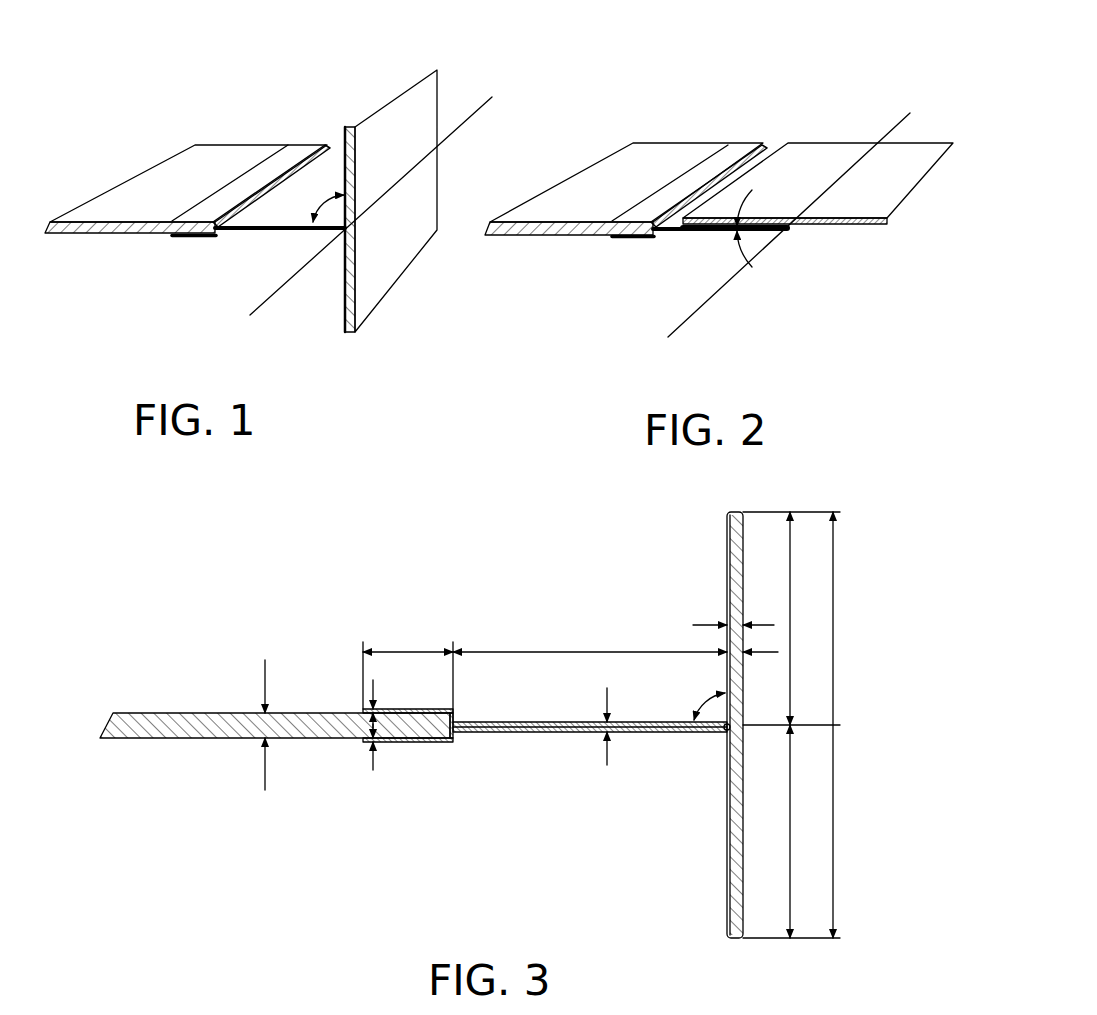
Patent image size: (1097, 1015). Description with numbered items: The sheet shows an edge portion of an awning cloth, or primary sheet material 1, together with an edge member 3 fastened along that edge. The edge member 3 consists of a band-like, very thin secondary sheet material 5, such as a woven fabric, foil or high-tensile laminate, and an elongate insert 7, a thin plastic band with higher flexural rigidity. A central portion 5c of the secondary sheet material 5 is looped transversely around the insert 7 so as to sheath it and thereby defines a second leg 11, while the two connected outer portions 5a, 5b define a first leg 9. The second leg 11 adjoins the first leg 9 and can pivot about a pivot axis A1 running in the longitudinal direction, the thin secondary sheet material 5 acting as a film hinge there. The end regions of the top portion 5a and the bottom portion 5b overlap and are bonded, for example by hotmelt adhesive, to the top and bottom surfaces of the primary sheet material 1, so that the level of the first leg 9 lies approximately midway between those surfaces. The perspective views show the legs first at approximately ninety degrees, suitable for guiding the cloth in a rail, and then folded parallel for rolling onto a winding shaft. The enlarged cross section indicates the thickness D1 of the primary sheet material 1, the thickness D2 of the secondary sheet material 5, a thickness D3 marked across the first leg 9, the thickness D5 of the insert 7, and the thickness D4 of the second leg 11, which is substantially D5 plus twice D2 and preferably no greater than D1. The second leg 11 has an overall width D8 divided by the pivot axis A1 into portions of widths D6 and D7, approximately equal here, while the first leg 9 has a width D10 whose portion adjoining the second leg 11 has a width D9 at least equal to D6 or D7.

In FIG. 1, the primary sheet material 1 is at (158, 163).
In FIG. 2, the primary sheet material 1 is at (597, 170).
In FIG. 3, the primary sheet material 1 is at (190, 713).
In FIG. 1, the edge member 3 is at (441, 60).
In FIG. 2, the edge member 3 is at (850, 138).
In FIG. 3, the edge member 3 is at (577, 734).
In FIG. 1, the secondary sheet material 5 is at (278, 233).
In FIG. 2, the secondary sheet material 5 is at (680, 233).
In FIG. 1, the top outer portion of the secondary sheet material 5a is at (335, 148).
In FIG. 2, the top outer portion of the secondary sheet material 5a is at (689, 186).
In FIG. 3, the top outer portion of the secondary sheet material 5a is at (566, 722).
In FIG. 1, the bottom outer portion of the secondary sheet material 5b is at (245, 234).
In FIG. 3, the bottom outer portion of the secondary sheet material 5b is at (502, 733).
In FIG. 1, the central portion of the secondary sheet material 5c is at (369, 313).
In FIG. 1, the insert 7 is at (344, 306).
In FIG. 2, the insert 7 is at (832, 225).
In FIG. 1, the first leg 9 is at (310, 203).
In FIG. 2, the first leg 9 is at (770, 148).
In FIG. 3, the first leg 9 is at (545, 720).
In FIG. 1, the second leg 11 is at (417, 203).
In FIG. 2, the second leg 11 is at (896, 201).
In FIG. 3, the second leg 11 is at (726, 866).
In FIG. 1, the pivot axis A1 is at (283, 290).
In FIG. 2, the pivot axis A1 is at (707, 300).
In FIG. 3, the pivot axis A1 is at (723, 733).
In FIG. 3, the thickness of the primary sheet material D1 is at (246, 725).
In FIG. 3, the thickness of the secondary sheet material D2 is at (391, 725).
In FIG. 3, the thickness of joint D3 is at (624, 726).
In FIG. 3, the thickness of the second leg D4 is at (760, 668).
In FIG. 3, the thickness of the insert D5 is at (735, 610).
In FIG. 3, the width of one portion of the second leg D6 is at (791, 831).
In FIG. 3, the width of the other portion of the second leg D7 is at (791, 618).
In FIG. 3, the width of the second leg D8 is at (850, 725).
In FIG. 3, the width of the portion of the first leg adjoining the second leg D9 is at (590, 639).
In FIG. 3, the width of the first leg D10 is at (408, 675).